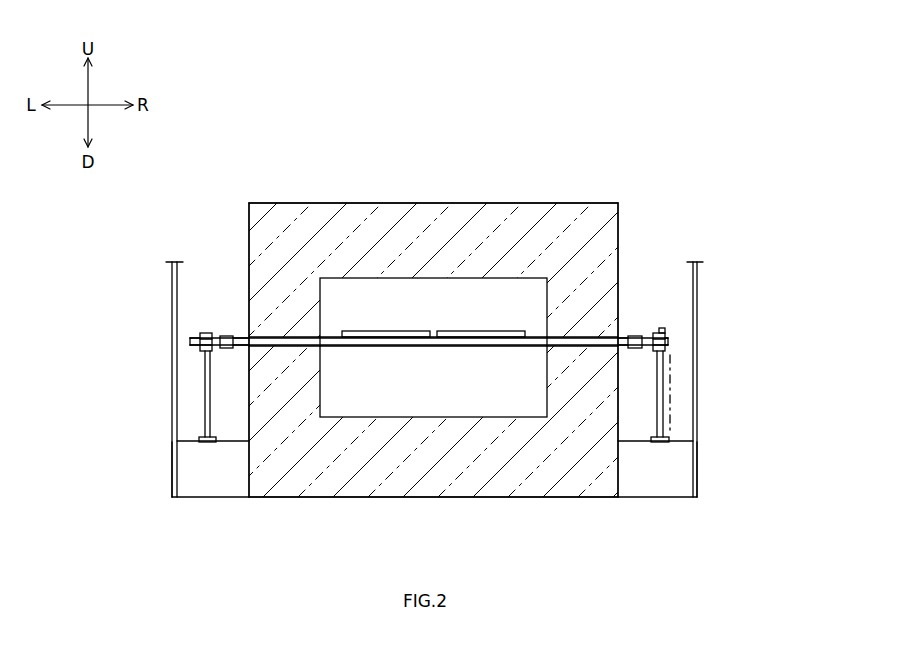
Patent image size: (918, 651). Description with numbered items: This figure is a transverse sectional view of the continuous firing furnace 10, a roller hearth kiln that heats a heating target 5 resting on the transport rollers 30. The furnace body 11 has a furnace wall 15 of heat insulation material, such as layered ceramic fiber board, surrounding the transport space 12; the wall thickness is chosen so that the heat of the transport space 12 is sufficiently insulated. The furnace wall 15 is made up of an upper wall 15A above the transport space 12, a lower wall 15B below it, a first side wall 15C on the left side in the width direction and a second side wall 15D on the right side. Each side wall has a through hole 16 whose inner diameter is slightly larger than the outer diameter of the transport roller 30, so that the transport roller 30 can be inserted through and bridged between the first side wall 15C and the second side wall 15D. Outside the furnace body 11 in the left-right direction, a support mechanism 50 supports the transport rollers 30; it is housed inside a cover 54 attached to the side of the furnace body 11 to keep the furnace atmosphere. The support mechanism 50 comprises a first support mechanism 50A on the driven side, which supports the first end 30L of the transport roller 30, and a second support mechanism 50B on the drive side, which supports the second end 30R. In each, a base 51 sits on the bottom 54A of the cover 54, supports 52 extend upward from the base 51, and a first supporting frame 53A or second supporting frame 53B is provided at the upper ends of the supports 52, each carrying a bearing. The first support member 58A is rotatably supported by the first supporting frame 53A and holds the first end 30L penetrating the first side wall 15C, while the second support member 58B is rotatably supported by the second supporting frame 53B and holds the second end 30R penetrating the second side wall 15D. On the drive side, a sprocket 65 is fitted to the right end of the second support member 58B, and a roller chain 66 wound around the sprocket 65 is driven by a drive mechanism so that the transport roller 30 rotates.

The heating target 5 is at (452, 331).
The continuous firing furnace 10 is at (672, 120).
The furnace body 11 is at (456, 200).
The transport space 12 is at (473, 402).
The furnace wall 15 is at (484, 222).
The upper wall 15A is at (436, 236).
The lower wall 15B is at (430, 481).
The first side wall 15C is at (328, 298).
The second side wall 15D is at (540, 258).
The through hole 16 is at (279, 333).
The transport roller 30 is at (433, 349).
The first end of the transport roller 30L is at (236, 331).
The second end of the transport roller 30R is at (626, 331).
The support mechanism 50 is at (432, 302).
The first support mechanism 50A is at (142, 302).
The second support mechanism 50B is at (721, 299).
The base 51 is at (210, 444).
The support 52 is at (204, 426).
The first supporting frame 53A is at (206, 333).
The second supporting frame 53B is at (664, 350).
The cover 54 is at (432, 396).
The bottom of the cover 54A is at (227, 488).
The first support member 58A is at (225, 349).
The second support member 58B is at (637, 350).
The sprocket 65 is at (668, 336).
The roller chain 66 is at (672, 406).